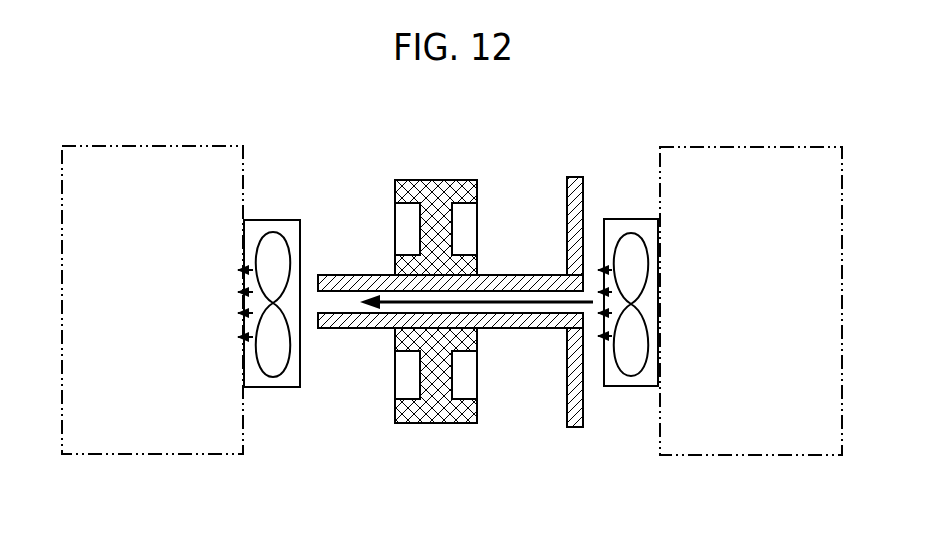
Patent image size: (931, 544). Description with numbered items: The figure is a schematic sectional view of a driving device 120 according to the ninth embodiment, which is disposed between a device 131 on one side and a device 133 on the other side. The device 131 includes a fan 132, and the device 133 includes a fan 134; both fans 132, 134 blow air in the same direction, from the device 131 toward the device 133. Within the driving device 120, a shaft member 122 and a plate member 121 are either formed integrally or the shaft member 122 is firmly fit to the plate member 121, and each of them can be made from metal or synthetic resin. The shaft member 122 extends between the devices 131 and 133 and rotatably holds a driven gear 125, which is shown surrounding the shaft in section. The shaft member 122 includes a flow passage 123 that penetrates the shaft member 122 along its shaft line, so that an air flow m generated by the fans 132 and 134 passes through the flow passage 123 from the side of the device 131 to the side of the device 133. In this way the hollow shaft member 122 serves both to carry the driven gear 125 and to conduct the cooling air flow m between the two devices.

The driving device 120 is at (460, 162).
The plate member 121 is at (567, 200).
The shaft member 122 is at (350, 275).
The flow passage 123 is at (340, 313).
The driven gear 125 is at (442, 423).
The device 131 is at (782, 146).
The fan 132 is at (633, 233).
The device 133 is at (183, 143).
The fan 134 is at (273, 232).
The air flow m is at (497, 295).